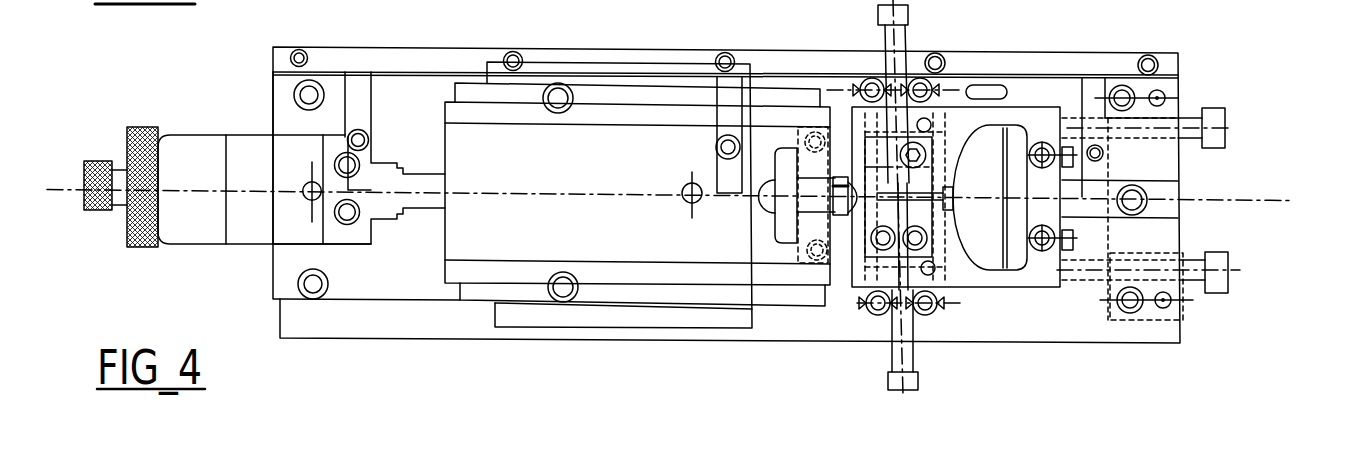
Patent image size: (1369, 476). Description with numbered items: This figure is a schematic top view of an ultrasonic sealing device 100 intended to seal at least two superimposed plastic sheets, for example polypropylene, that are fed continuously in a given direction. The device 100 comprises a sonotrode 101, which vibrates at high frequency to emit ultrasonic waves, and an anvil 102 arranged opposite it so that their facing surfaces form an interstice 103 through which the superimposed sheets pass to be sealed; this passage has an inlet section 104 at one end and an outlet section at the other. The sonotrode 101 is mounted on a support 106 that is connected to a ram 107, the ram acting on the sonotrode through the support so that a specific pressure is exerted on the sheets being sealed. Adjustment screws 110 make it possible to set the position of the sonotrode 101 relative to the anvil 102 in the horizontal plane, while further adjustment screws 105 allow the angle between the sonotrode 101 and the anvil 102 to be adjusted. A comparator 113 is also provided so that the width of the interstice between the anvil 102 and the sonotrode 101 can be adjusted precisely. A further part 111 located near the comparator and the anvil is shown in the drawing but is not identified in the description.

The ultrasonic sealing device 100 is at (1262, 117).
The sonotrode 101 is at (983, 250).
The anvil 102 is at (1025, 288).
The interstice 103 is at (1016, 113).
The inlet section 104 is at (1045, 273).
The adjustment screws 105 is at (1210, 110).
The support 106 is at (810, 273).
The ram 107 is at (258, 229).
The adjustment screws 110 is at (877, 20).
The pin 111 is at (946, 250).
The comparator 113 is at (839, 218).